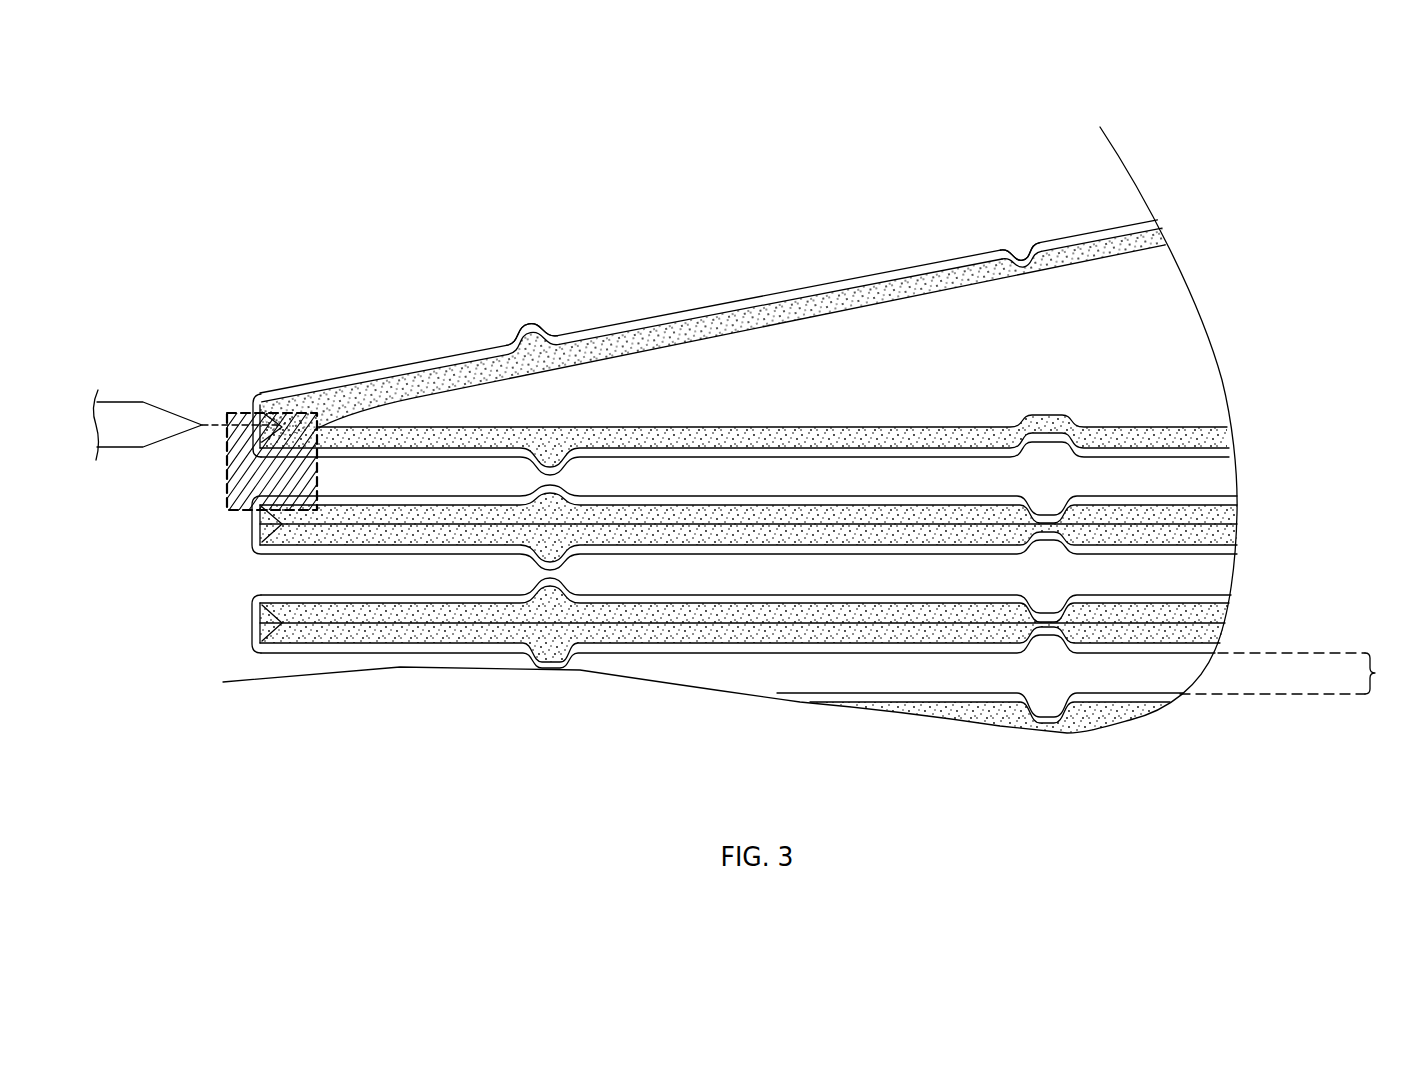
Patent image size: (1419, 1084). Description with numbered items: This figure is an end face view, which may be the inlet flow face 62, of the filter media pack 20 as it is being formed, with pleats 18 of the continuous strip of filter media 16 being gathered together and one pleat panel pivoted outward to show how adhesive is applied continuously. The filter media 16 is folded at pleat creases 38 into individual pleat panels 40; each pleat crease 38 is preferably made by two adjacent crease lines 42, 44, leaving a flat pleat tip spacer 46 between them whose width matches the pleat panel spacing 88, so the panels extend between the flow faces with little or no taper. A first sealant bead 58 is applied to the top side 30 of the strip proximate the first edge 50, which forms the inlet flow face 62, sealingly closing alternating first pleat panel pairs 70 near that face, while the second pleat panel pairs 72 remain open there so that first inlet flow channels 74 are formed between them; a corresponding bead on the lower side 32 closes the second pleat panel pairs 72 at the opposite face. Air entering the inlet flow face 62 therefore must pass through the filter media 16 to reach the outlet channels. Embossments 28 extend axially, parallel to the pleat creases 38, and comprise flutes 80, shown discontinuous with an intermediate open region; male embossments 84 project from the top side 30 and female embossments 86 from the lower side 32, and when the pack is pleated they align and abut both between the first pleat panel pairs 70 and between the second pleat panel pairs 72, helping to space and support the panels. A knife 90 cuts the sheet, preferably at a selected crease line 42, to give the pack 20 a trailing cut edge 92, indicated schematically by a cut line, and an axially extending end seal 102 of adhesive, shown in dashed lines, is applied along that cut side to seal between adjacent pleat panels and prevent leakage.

The filter media 16 is at (1150, 221).
The pleats 18 is at (236, 537).
The filter media pack 20 is at (555, 683).
The embossments 28 is at (517, 328).
The top side 30 is at (748, 290).
The lower side 32 is at (705, 320).
The pleat creases 38 is at (252, 506).
The pleat panels 40 is at (863, 263).
The crease line 42 is at (255, 653).
The crease line 44 is at (255, 598).
The pleat tip spacer 46 is at (255, 627).
The first edge 50 is at (962, 705).
The first sealant bead 58 is at (1147, 252).
The inlet flow face 62 is at (604, 594).
The first pleat panel pairs 70 is at (1232, 502).
The second pleat panel pairs 72 is at (887, 545).
The first inlet flow channels 74 is at (1143, 589).
The flutes 80 is at (732, 577).
The male embossments 84 is at (548, 322).
The female embossments 86 is at (1017, 266).
The pleat panel spacing 88 is at (1375, 673).
The knife 90 is at (117, 408).
The trailing cut edge 92 is at (251, 400).
The end seal 102 is at (247, 412).